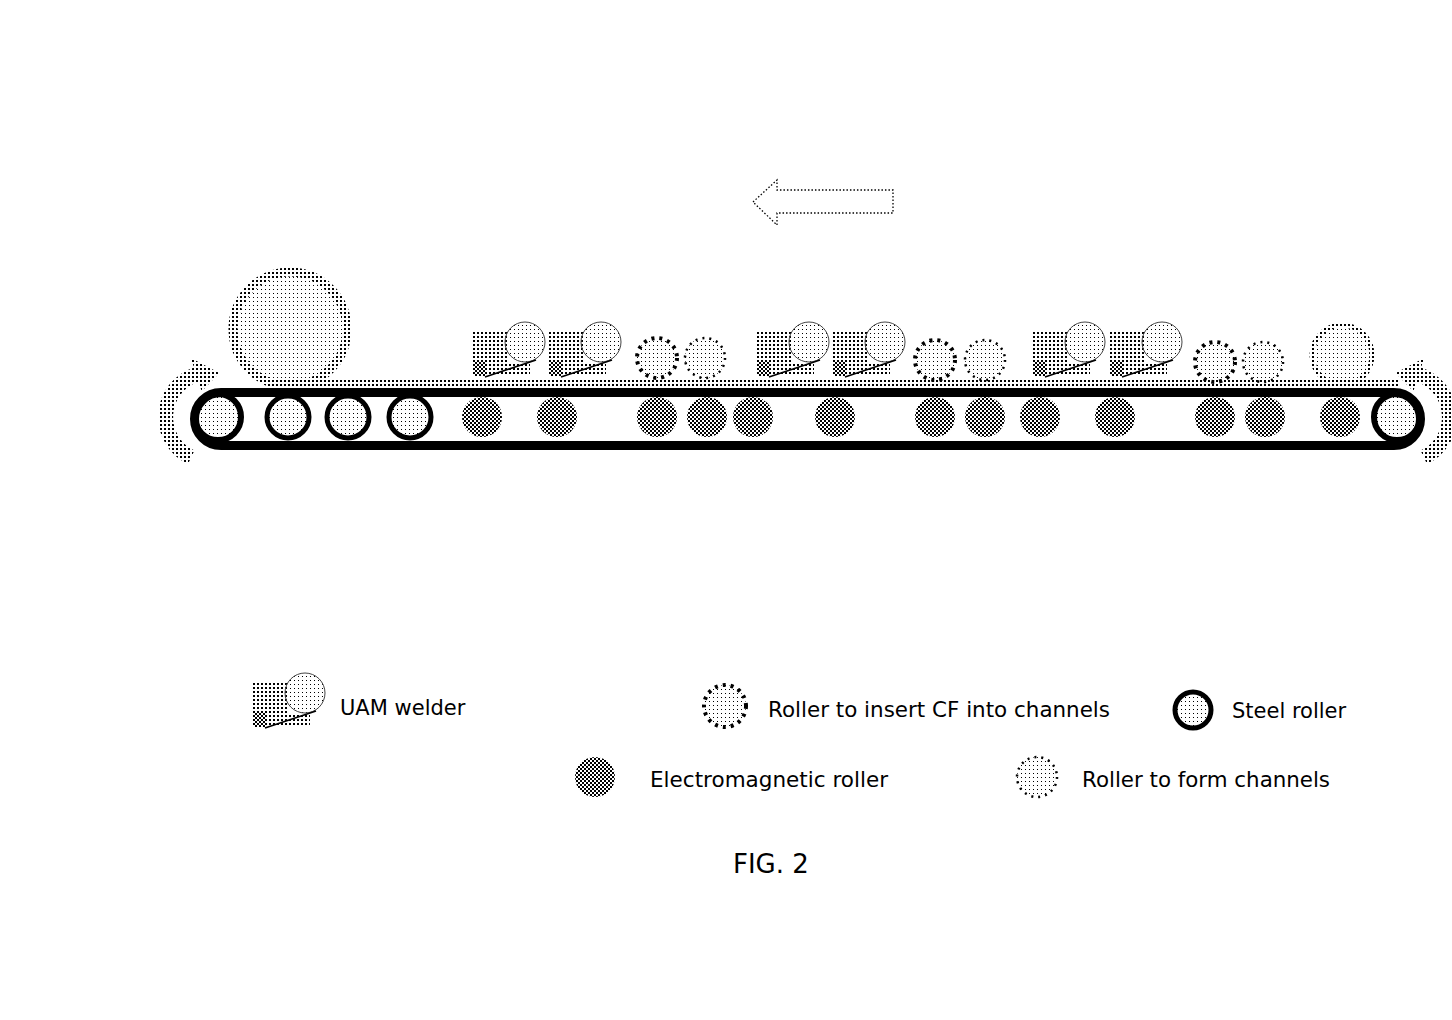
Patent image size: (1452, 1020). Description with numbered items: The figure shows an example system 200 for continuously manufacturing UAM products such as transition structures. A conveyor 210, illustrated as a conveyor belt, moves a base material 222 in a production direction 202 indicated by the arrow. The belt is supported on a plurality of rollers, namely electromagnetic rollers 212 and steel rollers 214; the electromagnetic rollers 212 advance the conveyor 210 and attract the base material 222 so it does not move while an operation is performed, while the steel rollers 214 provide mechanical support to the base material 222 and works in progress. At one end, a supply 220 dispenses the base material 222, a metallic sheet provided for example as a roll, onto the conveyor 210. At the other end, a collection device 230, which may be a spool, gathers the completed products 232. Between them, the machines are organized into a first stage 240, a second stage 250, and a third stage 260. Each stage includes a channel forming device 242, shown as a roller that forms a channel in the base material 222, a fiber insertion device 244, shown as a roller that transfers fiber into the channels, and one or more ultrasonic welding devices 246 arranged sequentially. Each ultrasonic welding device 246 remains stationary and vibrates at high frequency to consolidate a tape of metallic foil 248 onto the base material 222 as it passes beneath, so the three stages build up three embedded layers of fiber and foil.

The system 200 is at (600, 128).
The production direction 202 is at (843, 195).
The conveyor 210 is at (233, 390).
The electromagnetic rollers 212 is at (1333, 445).
The steel rollers 214 is at (403, 443).
The supply 220 is at (1341, 322).
The base material 222 is at (1297, 387).
The collection device 230 is at (270, 268).
The completed products 232 is at (397, 385).
The first stage 240 is at (1270, 465).
The channel forming device 242 is at (700, 337).
The fiber insertion device 244 is at (657, 337).
The ultrasonic welding device 246 is at (497, 332).
The tape of metallic foil 248 is at (1125, 385).
The second stage 250 is at (993, 465).
The third stage 260 is at (710, 465).